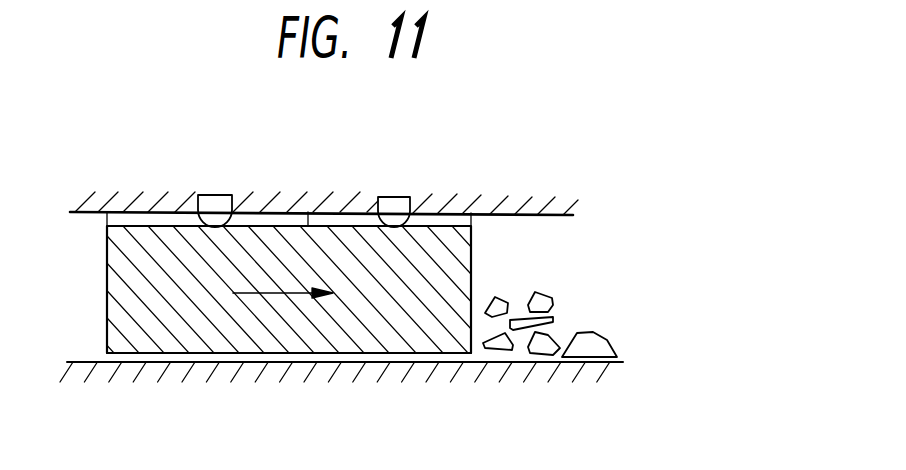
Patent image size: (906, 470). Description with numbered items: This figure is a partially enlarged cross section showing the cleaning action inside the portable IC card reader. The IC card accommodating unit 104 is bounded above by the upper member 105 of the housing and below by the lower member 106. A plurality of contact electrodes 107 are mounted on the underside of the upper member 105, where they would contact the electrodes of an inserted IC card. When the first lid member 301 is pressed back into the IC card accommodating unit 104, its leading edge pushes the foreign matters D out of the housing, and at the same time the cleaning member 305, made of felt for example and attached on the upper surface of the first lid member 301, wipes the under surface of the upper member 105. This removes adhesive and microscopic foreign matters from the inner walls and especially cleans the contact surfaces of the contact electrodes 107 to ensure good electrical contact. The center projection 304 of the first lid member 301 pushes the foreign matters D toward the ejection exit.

The IC card accommodating unit 104 is at (502, 230).
The upper member 105 is at (315, 205).
The lower member 106 is at (300, 382).
The contact electrodes 107 is at (217, 203).
The first lid member 301 is at (130, 276).
The center projection 304 is at (423, 338).
The cleaning member 305 is at (438, 215).
The foreign matters D is at (604, 328).